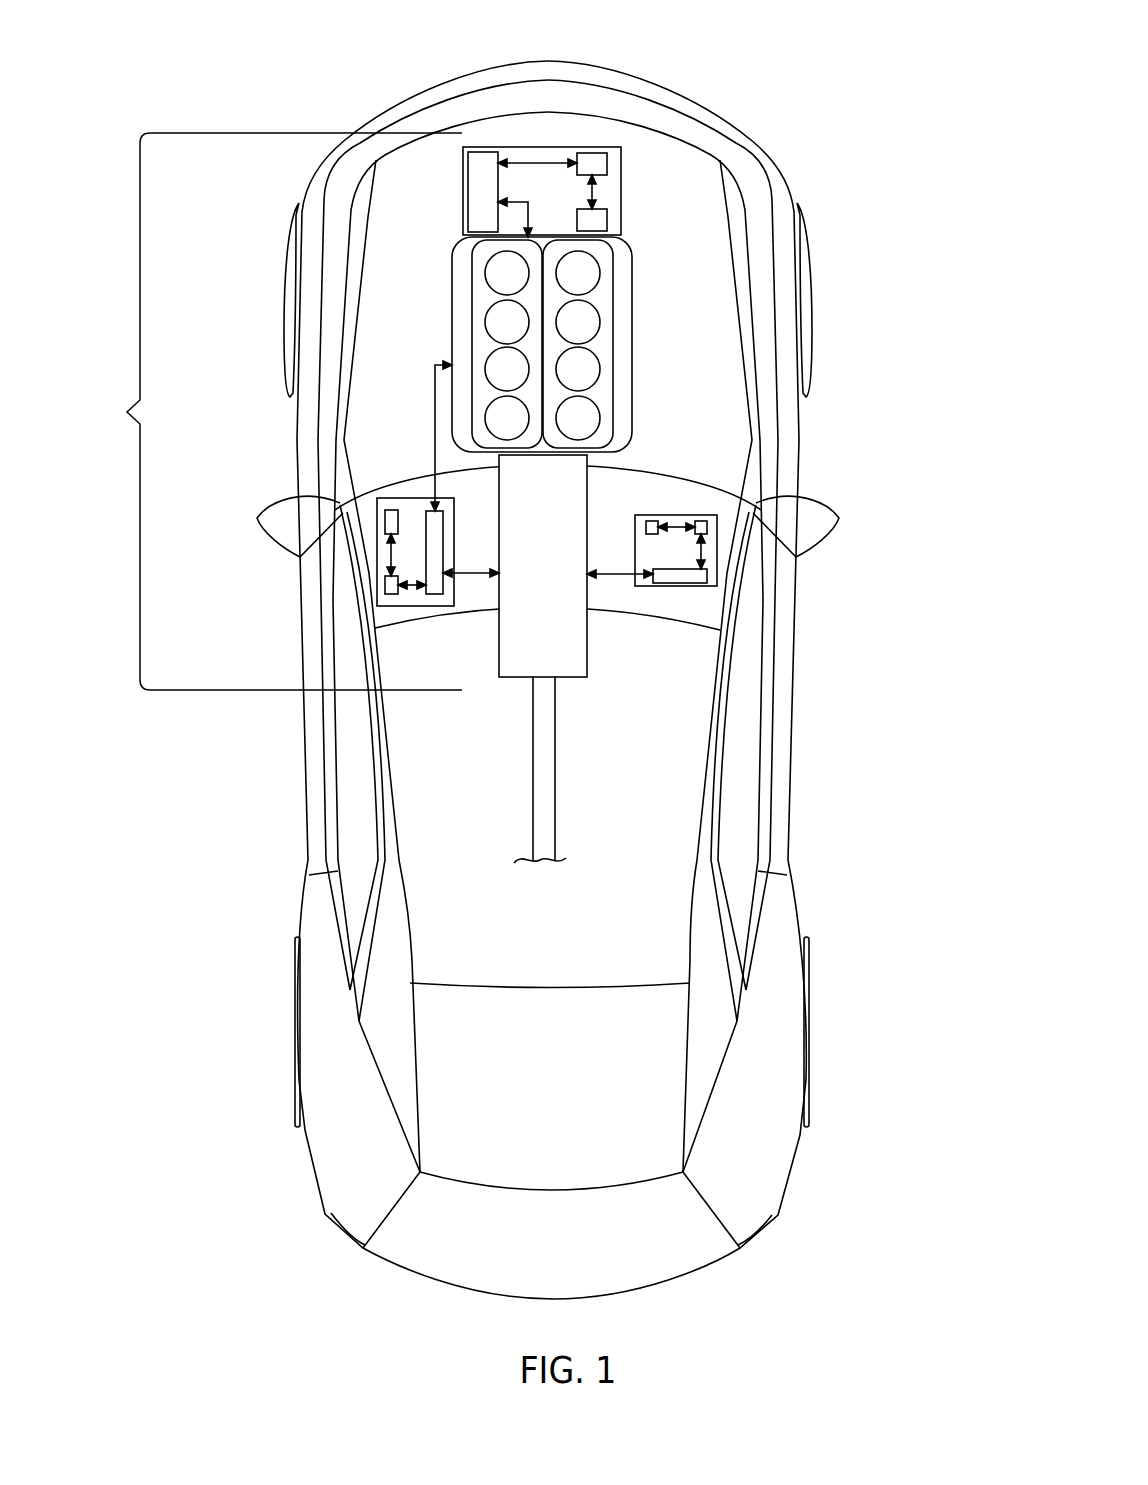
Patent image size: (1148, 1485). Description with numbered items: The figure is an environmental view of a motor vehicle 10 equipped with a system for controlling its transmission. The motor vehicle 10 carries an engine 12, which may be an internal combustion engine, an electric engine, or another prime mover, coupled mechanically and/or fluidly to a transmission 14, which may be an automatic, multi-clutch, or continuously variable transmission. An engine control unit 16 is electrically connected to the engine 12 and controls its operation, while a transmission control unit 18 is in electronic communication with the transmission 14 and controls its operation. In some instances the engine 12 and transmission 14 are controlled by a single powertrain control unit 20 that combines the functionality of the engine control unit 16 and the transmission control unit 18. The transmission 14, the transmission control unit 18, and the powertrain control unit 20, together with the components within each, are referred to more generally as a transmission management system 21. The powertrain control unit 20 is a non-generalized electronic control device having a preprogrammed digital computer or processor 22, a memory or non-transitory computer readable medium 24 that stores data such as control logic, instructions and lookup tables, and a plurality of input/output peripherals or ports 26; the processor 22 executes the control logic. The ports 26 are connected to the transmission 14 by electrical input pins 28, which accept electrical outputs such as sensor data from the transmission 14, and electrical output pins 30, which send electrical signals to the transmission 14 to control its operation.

The motor vehicle 10 is at (814, 92).
The engine 12 is at (632, 352).
The transmission 14 is at (572, 680).
The engine control unit 16 is at (468, 205).
The transmission control unit 18 is at (635, 560).
The powertrain control unit 20 is at (408, 606).
The transmission management system 21 is at (275, 411).
The processor 22 is at (592, 152).
The memory 24 is at (608, 220).
The input/output ports 26 is at (483, 152).
The electrical input pins 28 is at (421, 527).
The electrical output pins 30 is at (434, 418).